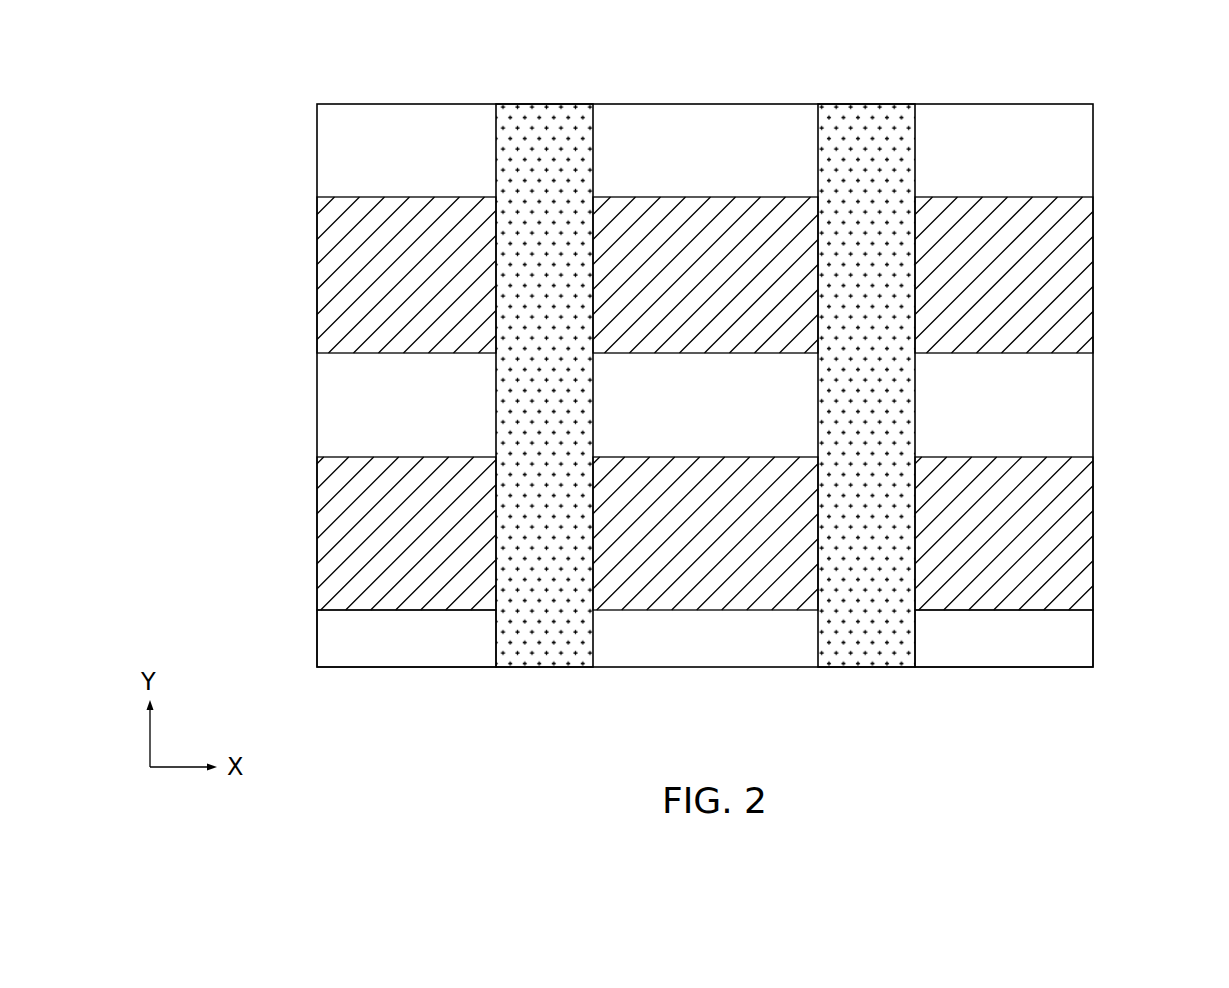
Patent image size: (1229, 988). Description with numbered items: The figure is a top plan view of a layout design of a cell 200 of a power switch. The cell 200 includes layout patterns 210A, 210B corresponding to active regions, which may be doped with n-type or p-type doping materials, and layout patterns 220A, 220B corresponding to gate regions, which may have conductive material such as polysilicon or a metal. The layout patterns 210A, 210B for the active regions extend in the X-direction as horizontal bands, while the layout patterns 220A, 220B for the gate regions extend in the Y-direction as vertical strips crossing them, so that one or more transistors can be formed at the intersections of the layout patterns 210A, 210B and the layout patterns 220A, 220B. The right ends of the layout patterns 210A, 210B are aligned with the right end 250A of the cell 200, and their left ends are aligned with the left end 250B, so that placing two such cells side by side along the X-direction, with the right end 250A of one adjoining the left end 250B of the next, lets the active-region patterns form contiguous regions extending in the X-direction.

The cell 200 is at (203, 75).
The layout pattern 210A is at (350, 197).
The layout pattern 210B is at (350, 457).
The layout pattern 220A is at (495, 130).
The layout pattern 220B is at (915, 130).
The right end 250A is at (1093, 635).
The left end 250B is at (317, 637).